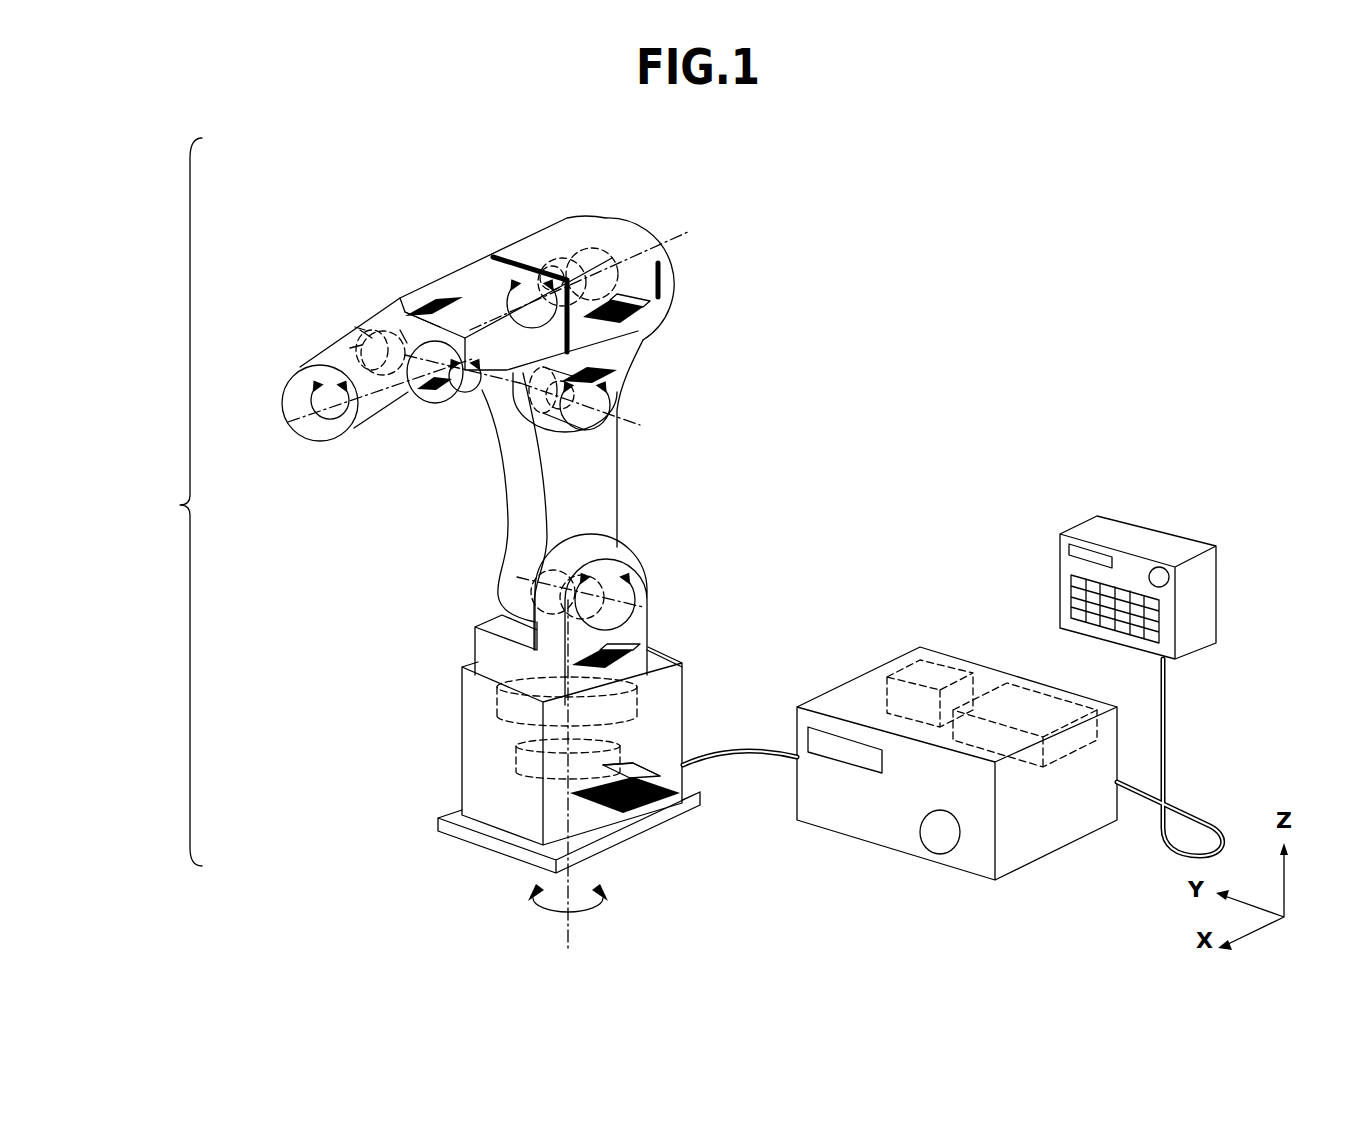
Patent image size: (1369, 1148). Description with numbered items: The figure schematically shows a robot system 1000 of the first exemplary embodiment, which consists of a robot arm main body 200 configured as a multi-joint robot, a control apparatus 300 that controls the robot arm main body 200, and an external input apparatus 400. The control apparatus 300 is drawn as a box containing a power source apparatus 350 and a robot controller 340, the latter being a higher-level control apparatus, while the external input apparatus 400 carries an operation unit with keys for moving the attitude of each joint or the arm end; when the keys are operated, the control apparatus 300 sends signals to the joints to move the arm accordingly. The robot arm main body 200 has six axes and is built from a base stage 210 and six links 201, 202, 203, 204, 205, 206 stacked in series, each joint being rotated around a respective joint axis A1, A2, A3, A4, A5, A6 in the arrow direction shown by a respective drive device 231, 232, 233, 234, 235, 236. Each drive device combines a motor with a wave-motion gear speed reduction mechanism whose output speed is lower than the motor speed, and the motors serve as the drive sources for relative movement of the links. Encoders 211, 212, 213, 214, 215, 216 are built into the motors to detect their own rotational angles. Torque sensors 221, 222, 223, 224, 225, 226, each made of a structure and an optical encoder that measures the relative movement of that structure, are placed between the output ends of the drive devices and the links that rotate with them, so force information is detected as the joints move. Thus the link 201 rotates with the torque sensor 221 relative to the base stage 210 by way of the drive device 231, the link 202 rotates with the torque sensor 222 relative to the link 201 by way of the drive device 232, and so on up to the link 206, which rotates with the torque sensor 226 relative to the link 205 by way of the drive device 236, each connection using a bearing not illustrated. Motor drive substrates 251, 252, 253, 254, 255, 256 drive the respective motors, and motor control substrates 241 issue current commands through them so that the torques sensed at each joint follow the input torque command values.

The robot system 1000 is at (1000, 169).
The robot arm main body 200 is at (158, 502).
The link 201 is at (492, 648).
The link 202 is at (600, 477).
The link 203 is at (652, 242).
The link 204 is at (487, 272).
The link 205 is at (385, 393).
The link 206 is at (362, 420).
The base stage 210 is at (600, 820).
The encoder 211 is at (517, 763).
The encoder 212 is at (627, 570).
The encoder 213 is at (592, 343).
The encoder 214 is at (600, 252).
The encoder 215 is at (360, 327).
The encoder 216 is at (393, 323).
The torque sensor 221 is at (507, 688).
The torque sensor 222 is at (565, 585).
The torque sensor 223 is at (577, 348).
The torque sensor 224 is at (545, 265).
The torque sensor 225 is at (387, 317).
The torque sensor 226 is at (300, 383).
The drive device 231 is at (507, 735).
The drive device 232 is at (600, 590).
The drive device 233 is at (577, 442).
The drive device 234 is at (583, 258).
The drive device 235 is at (370, 328).
The drive device 236 is at (355, 348).
The motor control substrate 241 is at (448, 300).
The motor drive substrate 251 is at (657, 793).
The motor drive substrate 252 is at (617, 665).
The motor drive substrate 253 is at (612, 408).
The motor drive substrate 254 is at (650, 320).
The motor drive substrate 255 is at (407, 303).
The motor drive substrate 256 is at (408, 410).
The control apparatus 300 is at (895, 652).
The robot controller 340 is at (933, 670).
The power source apparatus 350 is at (1028, 707).
The external input apparatus 400 is at (1128, 538).
The joint axis A1 is at (568, 935).
The joint axis A2 is at (647, 610).
The joint axis A3 is at (612, 418).
The joint axis A4 is at (650, 243).
The joint axis A5 is at (483, 400).
The joint axis A6 is at (307, 420).